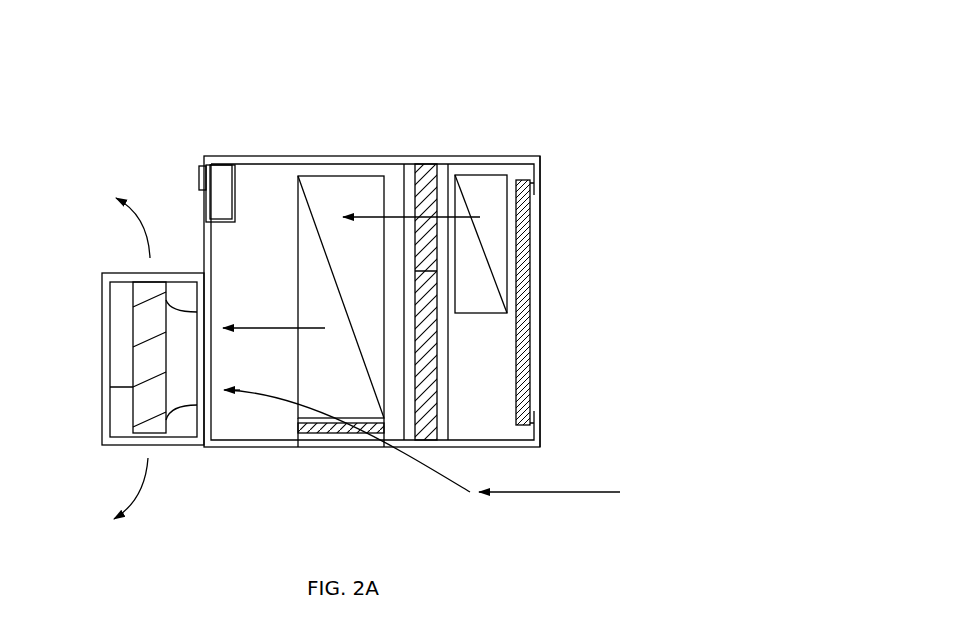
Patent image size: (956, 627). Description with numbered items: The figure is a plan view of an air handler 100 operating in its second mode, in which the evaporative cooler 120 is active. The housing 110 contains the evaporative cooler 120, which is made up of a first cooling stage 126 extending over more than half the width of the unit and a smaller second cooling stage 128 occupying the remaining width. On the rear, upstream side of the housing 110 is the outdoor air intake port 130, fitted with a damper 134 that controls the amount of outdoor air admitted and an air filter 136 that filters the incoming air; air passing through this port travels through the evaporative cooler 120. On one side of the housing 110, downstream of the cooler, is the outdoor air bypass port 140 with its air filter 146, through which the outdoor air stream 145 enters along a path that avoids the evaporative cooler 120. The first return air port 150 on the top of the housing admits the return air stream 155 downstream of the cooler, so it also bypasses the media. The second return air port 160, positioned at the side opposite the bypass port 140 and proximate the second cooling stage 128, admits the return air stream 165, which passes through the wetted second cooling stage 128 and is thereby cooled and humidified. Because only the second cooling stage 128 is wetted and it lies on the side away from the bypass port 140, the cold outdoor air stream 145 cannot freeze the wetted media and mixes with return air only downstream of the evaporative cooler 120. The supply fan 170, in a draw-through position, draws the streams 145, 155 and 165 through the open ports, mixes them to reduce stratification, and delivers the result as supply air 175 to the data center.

The air handler 100 is at (541, 90).
The housing 110 is at (313, 157).
The evaporative cooler 120 is at (449, 400).
The first cooling stage 126 is at (433, 417).
The second cooling stage 128 is at (425, 190).
The outdoor air intake port 130 is at (551, 232).
The damper 134 is at (536, 323).
The air filter 136 is at (520, 363).
The outdoor air bypass port 140 is at (335, 453).
The outdoor air stream 145 is at (445, 493).
The air filter 146 is at (312, 440).
The first return air port 150 is at (296, 246).
The return air stream 155 is at (262, 326).
The second return air port 160 is at (474, 324).
The return air stream 165 is at (372, 222).
The supply fan 170 is at (129, 403).
The supply air 175 is at (150, 232).